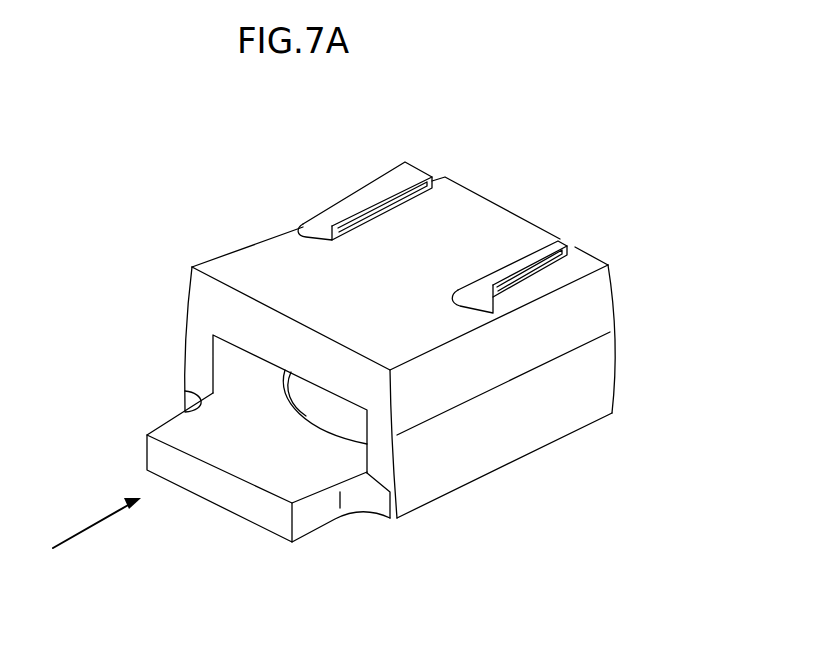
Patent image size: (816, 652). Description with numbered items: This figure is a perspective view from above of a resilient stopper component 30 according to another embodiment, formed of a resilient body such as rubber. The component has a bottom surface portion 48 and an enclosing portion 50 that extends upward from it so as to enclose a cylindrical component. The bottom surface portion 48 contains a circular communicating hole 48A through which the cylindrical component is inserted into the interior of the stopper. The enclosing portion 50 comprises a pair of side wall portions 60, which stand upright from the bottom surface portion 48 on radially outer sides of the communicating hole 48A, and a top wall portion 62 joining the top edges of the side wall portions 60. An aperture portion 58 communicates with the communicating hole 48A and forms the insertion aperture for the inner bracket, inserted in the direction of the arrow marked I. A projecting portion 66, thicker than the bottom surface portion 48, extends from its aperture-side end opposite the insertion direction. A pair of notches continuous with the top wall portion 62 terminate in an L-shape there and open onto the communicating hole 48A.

The resilient stopper component 30 is at (156, 142).
The enclosing portion 50 is at (260, 226).
The top wall portion 62 is at (480, 222).
The side wall portions 60 is at (585, 383).
The bottom surface portion 48 is at (257, 390).
The communicating hole 48A is at (301, 413).
The aperture portion 58 is at (226, 356).
The projecting portion 66 is at (325, 526).